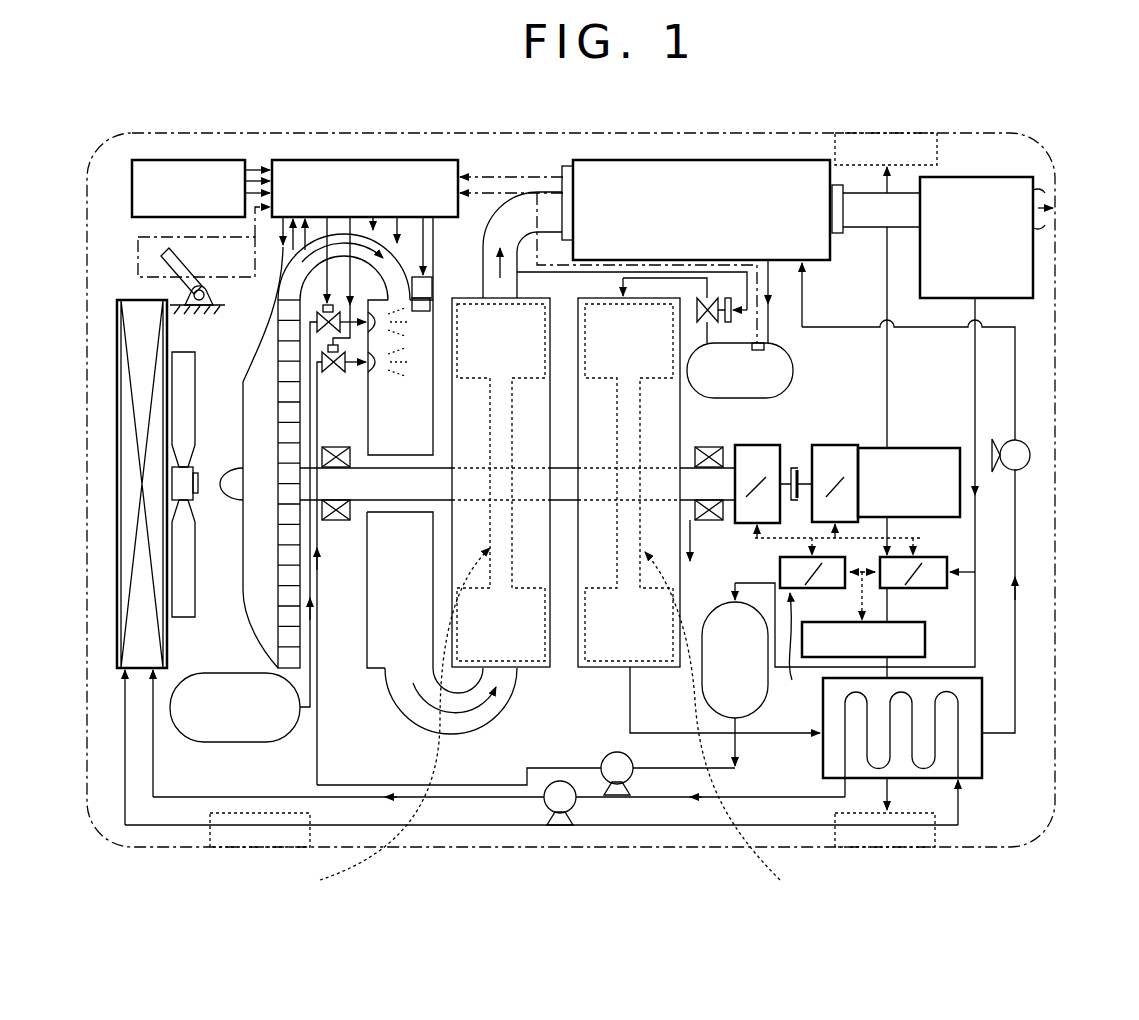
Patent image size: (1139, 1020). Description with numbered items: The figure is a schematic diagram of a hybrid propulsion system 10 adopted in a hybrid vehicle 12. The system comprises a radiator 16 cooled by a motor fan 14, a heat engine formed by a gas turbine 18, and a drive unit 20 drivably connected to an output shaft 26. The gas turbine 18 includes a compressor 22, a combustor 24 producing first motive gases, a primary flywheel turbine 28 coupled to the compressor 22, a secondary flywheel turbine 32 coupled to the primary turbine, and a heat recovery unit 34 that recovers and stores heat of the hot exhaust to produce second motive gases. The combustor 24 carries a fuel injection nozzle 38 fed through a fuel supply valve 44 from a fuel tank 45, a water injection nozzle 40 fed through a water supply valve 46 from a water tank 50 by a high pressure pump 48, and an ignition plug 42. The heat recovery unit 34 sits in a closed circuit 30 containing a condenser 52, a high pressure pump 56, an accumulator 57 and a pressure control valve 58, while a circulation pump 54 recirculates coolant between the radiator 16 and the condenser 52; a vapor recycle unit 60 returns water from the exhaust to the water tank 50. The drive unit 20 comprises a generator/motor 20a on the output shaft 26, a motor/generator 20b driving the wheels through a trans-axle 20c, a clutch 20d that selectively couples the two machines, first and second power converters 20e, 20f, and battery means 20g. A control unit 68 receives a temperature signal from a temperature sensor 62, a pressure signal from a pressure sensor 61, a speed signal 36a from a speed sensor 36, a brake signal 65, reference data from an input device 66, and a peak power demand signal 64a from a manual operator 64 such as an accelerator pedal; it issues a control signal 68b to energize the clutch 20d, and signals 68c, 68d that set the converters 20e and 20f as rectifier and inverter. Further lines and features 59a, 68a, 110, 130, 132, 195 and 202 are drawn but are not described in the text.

The hybrid propulsion system 10 is at (533, 170).
The hybrid vehicle 12 is at (870, 128).
The motor fan 14 is at (183, 485).
The radiator 16 is at (117, 325).
The gas turbine 18 is at (540, 293).
The drive unit 20 is at (927, 543).
The generator/motor 20a is at (755, 445).
The motor/generator 20b is at (857, 443).
The trans-axle 20c is at (932, 448).
The clutch 20d is at (830, 443).
The first power converter 20e is at (830, 553).
The second power converter 20f is at (948, 588).
The battery means 20g is at (925, 642).
The compressor 22 is at (258, 443).
The combustor 24 is at (413, 598).
The output shaft 26 is at (692, 480).
The primary flywheel turbine 28 is at (513, 638).
The closed circuit 30 is at (1017, 396).
The secondary flywheel turbine 32 is at (614, 638).
The heat recovery unit 34 is at (723, 152).
The speed sensor 36 is at (685, 507).
The speed signal 36a is at (258, 172).
The fuel injection nozzle 38 is at (390, 360).
The water injection nozzle 40 is at (392, 382).
The ignition plug 42 is at (432, 278).
The fuel supply valve 44 is at (310, 325).
The fuel tank 45 is at (230, 673).
The water supply valve 46 is at (333, 373).
The high pressure pump 48 is at (615, 750).
The water tank 50 is at (760, 717).
The condenser 52 is at (982, 750).
The circulation pump 54 is at (552, 815).
The high pressure pump 56 is at (1030, 455).
The accumulator 57 is at (793, 365).
The pressure control valve 58 is at (697, 317).
The signal line 59a is at (400, 228).
The vapor recycle unit 60 is at (1033, 257).
The pressure sensor 61 is at (757, 352).
The temperature sensor 62 is at (565, 165).
The manual operator 64 is at (168, 283).
The peak power demand signal 64a is at (138, 258).
The brake signal 65 is at (258, 168).
The input device 66 is at (177, 160).
The control unit 68 is at (300, 160).
The control signal line 68a is at (280, 238).
The control signal 68b is at (208, 294).
The signal 68c is at (278, 282).
The signal 68d is at (420, 230).
The heat exchange section 110 is at (547, 721).
The exhaust flow 130 is at (515, 682).
The exhaust pipe 132 is at (512, 177).
The vapor pipe 195 is at (856, 228).
The return line 202 is at (977, 308).